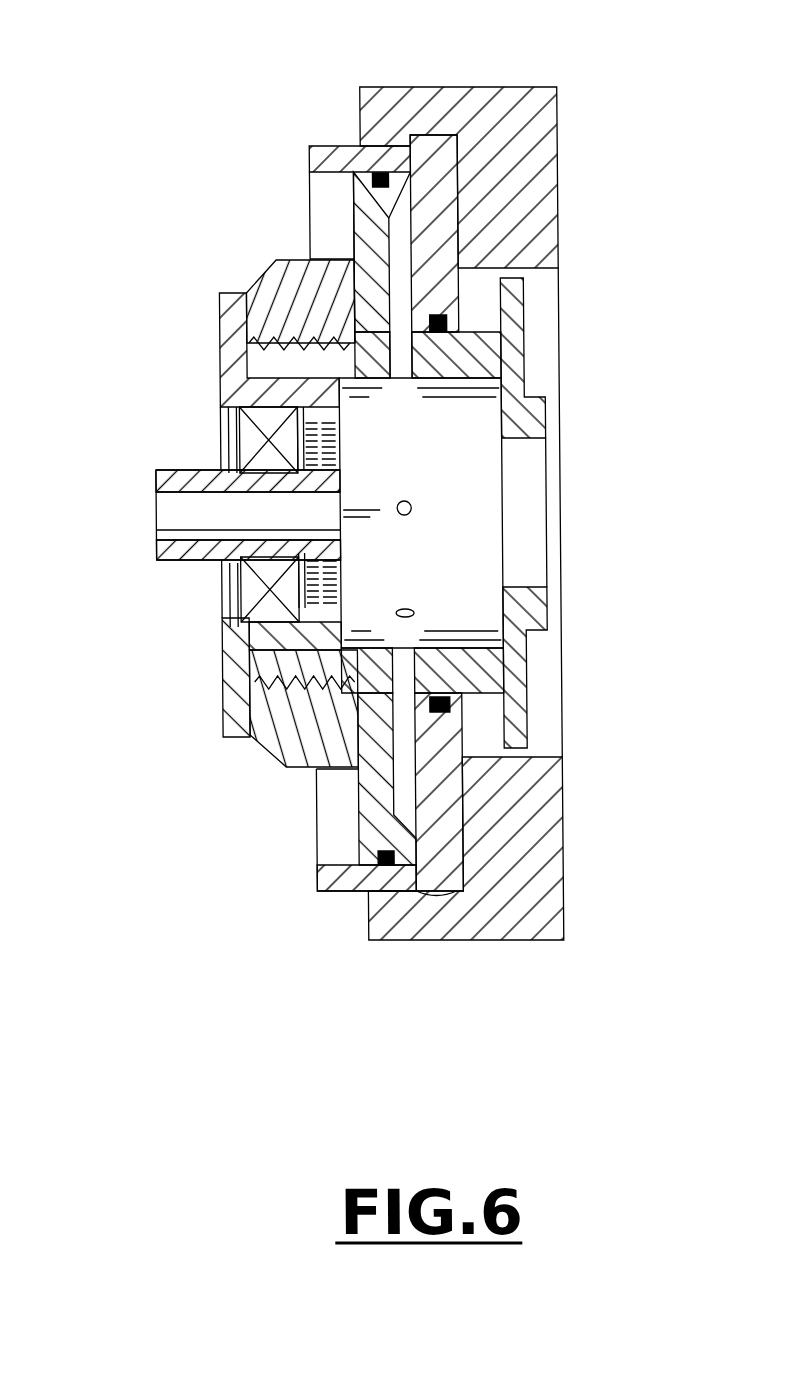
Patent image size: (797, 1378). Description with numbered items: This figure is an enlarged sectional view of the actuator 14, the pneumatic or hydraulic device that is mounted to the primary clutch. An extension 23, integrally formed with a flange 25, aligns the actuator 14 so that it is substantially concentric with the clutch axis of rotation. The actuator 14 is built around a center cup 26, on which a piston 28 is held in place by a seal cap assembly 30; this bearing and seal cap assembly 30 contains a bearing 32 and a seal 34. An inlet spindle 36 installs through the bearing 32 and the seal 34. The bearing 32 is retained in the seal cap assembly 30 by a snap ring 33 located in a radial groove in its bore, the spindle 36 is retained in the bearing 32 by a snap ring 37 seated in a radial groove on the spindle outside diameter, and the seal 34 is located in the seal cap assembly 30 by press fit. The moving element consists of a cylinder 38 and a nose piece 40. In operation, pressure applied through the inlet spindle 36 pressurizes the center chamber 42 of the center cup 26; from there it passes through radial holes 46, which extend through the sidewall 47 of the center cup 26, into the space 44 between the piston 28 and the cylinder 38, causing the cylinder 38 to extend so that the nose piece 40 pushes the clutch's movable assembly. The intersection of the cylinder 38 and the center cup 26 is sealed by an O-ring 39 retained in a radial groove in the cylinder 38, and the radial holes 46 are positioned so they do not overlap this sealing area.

The actuator 14 is at (177, 158).
The extension 23 is at (548, 440).
The flange 25 is at (512, 303).
The center cup 26 is at (532, 352).
The piston 28 is at (362, 209).
The seal cap assembly 30 is at (280, 747).
The bearing 32 is at (256, 579).
The snap ring 33 is at (226, 615).
The seal 34 is at (318, 437).
The inlet spindle 36 is at (163, 470).
The snap ring 37 is at (321, 503).
The cylinder 38 is at (328, 873).
The O-ring 39 is at (443, 323).
The nose piece 40 is at (487, 87).
The center chamber 42 is at (467, 512).
The space 44 is at (405, 772).
The radial holes 46 is at (400, 360).
The sidewall 47 is at (486, 365).